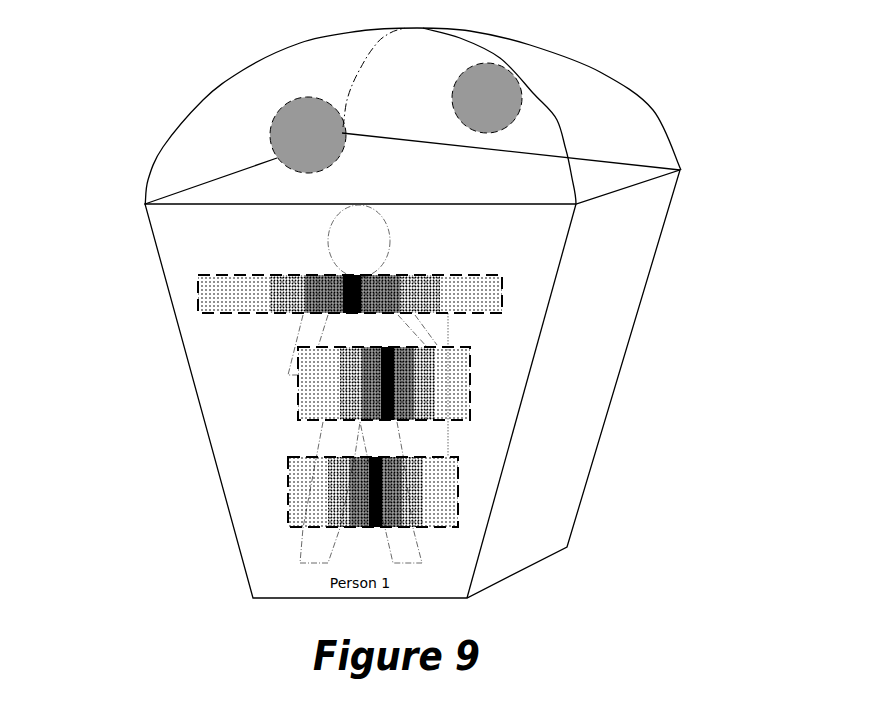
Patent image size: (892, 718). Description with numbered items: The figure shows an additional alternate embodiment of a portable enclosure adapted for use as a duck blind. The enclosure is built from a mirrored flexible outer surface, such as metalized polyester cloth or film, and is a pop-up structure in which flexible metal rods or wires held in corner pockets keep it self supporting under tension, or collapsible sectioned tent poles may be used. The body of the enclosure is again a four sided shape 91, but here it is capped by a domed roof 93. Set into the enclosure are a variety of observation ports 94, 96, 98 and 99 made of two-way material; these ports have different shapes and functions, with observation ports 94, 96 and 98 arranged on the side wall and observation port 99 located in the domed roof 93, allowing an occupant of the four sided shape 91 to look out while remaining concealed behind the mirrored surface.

The four sided shape 91 is at (592, 421).
The domed roof 93 is at (558, 120).
The observation port 94 is at (340, 528).
The observation port 96 is at (343, 387).
The observation port 98 is at (233, 313).
The observation port 99 is at (305, 125).